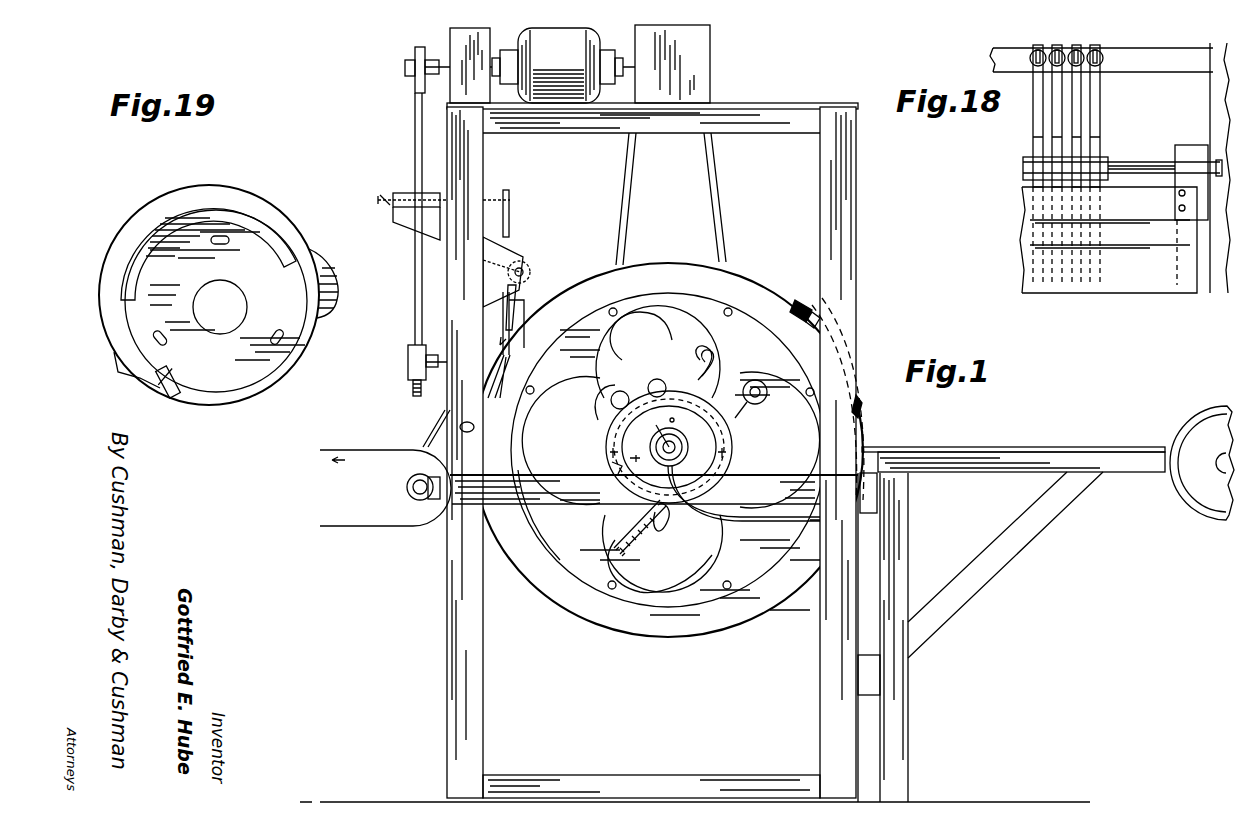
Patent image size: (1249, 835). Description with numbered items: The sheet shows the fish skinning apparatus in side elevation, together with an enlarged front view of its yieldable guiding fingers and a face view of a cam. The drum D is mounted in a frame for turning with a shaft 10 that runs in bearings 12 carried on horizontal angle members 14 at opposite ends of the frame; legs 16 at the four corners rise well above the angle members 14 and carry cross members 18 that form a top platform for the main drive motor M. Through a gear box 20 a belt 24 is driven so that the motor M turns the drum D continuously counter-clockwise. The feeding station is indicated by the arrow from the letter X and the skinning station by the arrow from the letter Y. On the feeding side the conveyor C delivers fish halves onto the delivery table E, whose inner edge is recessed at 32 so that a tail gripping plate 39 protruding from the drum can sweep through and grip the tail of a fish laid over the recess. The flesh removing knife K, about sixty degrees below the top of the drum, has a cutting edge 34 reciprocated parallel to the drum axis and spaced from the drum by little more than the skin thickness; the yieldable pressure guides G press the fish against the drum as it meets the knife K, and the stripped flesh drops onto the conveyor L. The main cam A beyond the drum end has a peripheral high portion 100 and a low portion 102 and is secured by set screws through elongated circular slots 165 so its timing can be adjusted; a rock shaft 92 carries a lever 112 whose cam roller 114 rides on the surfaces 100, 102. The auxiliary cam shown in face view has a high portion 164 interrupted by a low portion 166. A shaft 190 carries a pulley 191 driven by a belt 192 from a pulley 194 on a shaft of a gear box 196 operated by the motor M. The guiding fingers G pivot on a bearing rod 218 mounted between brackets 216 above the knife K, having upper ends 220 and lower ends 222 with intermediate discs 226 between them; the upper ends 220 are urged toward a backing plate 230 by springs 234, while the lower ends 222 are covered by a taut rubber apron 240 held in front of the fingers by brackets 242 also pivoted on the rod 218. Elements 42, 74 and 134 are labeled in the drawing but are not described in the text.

In FIG. 1, the shaft 10 is at (662, 443).
In FIG. 1, the bearings 12 is at (614, 462).
In FIG. 1, the horizontal angle members 14 is at (557, 500).
In FIG. 1, the legs 16 is at (856, 230).
In FIG. 1, the cross members 18 is at (758, 122).
In FIG. 1, the gear box 20 is at (710, 48).
In FIG. 1, the belt 24 is at (637, 190).
In FIG. 1, the recess 32 is at (868, 447).
In FIG. 1, the cutting edge 34 is at (499, 377).
In FIG. 1, the tail gripping plate 39 is at (812, 322).
In FIG. 1, the blade guard 42 is at (800, 303).
In FIG. 1, the roller 74 is at (718, 362).
In FIG. 1, the rock shaft 92 is at (612, 403).
In FIG. 1, the high portion 100 is at (606, 424).
In FIG. 19, the high portion 100 is at (102, 262).
In FIG. 19, the low portion 102 is at (222, 400).
In FIG. 1, the lever 112 is at (624, 345).
In FIG. 1, the cam roller 114 is at (660, 360).
In FIG. 1, the valve with hose 134 is at (836, 605).
In FIG. 1, the high portion 164 is at (685, 415).
In FIG. 19, the high portion 164 is at (176, 396).
In FIG. 19, the elongated circular slots 165 is at (220, 240).
In FIG. 19, the low portion 166 is at (140, 338).
In FIG. 1, the shaft 190 is at (432, 390).
In FIG. 1, the pulley 191 is at (408, 356).
In FIG. 1, the belt 192 is at (415, 255).
In FIG. 1, the pulley 194 is at (412, 62).
In FIG. 1, the gear box 196 is at (450, 40).
In FIG. 1, the brackets 216 is at (508, 250).
In FIG. 1, the bearing rod 218 is at (523, 268).
In FIG. 18, the bearing rod 218 is at (1146, 145).
In FIG. 18, the upper ends 220 is at (1033, 110).
In FIG. 18, the lower ends 222 is at (1035, 262).
In FIG. 18, the intermediate discs 226 is at (1105, 157).
In FIG. 18, the backing plate 230 is at (1138, 56).
In FIG. 18, the spring 234 is at (1034, 48).
In FIG. 18, the rubber apron 240 is at (1160, 290).
In FIG. 18, the brackets 242 is at (1190, 145).
In FIG. 1, the main cam A is at (739, 466).
In FIG. 19, the main cam A is at (110, 218).
In FIG. 1, the conveyor C is at (1205, 412).
In FIG. 1, the drum D is at (745, 268).
In FIG. 1, the delivery table E is at (1095, 447).
In FIG. 1, the yieldable pressure guides G is at (520, 310).
In FIG. 1, the flesh removing knife K is at (512, 348).
In FIG. 1, the conveyor L is at (352, 450).
In FIG. 1, the main drive motor M is at (575, 45).
In FIG. 1, the feeding station X is at (949, 433).
In FIG. 1, the skinning station Y is at (466, 351).